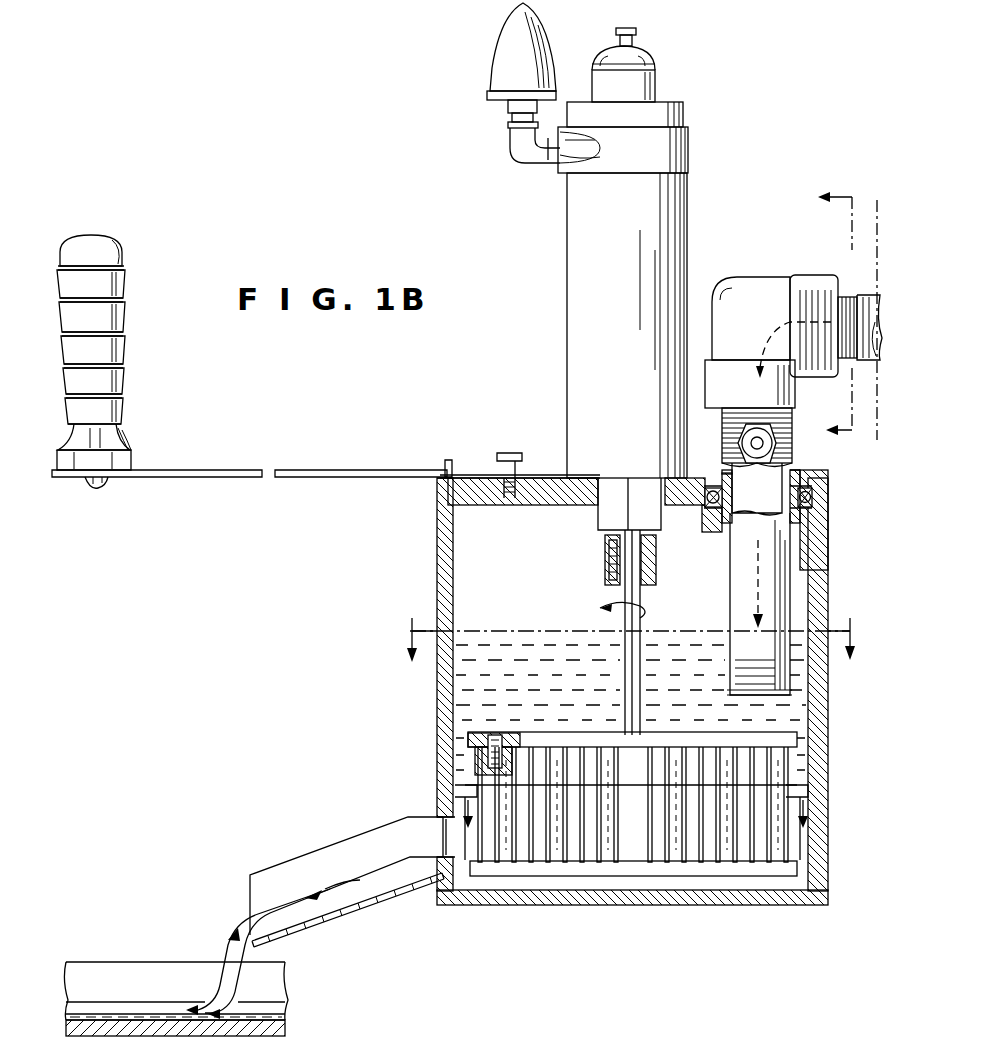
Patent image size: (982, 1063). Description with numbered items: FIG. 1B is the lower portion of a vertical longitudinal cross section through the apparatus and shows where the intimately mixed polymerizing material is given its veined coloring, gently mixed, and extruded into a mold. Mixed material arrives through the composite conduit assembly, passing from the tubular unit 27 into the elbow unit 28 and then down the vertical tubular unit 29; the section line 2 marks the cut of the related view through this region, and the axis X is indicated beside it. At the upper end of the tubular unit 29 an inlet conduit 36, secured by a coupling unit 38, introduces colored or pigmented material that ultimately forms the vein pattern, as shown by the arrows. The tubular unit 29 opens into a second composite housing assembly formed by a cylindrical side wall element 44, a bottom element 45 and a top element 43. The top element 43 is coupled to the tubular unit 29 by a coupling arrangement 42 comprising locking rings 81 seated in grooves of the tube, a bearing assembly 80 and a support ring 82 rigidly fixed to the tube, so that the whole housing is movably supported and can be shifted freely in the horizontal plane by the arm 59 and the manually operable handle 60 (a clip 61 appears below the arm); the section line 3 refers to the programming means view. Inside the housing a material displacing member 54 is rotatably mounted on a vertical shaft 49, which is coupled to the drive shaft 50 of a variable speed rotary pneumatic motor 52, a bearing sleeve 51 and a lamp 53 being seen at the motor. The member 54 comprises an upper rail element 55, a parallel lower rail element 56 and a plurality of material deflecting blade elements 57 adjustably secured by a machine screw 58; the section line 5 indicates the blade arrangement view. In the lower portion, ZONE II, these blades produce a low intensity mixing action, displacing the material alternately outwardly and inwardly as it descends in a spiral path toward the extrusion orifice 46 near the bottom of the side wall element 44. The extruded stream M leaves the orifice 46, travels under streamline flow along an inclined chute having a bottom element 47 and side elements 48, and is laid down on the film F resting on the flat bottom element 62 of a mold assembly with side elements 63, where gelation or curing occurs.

The tubular unit 27 is at (868, 304).
The elbow unit 28 is at (742, 292).
The tubular unit 29 is at (727, 455).
The inlet conduit 36 is at (746, 438).
The coupling unit 38 is at (771, 458).
The coupling arrangement 42 is at (708, 516).
The top element 43 is at (546, 477).
The cylindrical side wall element 44 is at (437, 561).
The bottom element 45 is at (620, 899).
The extrusion orifice 46 is at (440, 859).
The bottom element 47 is at (345, 894).
The side elements 48 is at (334, 844).
The vertical shaft 49 is at (624, 684).
The drive shaft 50 is at (608, 543).
The shaft 51 is at (606, 560).
The variable speed rotary pneumatic motor 52 is at (576, 266).
The indicator lamp 53 is at (551, 162).
The material displacing member 54 is at (672, 748).
The upper rail element 55 is at (765, 742).
The lower rail element 56 is at (732, 878).
The material deflecting blade elements 57 is at (586, 755).
The machine screw 58 is at (492, 734).
The arm 59 is at (326, 471).
The manually operable handle 60 is at (119, 345).
The clip 61 is at (101, 483).
The flat bottom element 62 is at (178, 1025).
The side elements 63 is at (143, 991).
The bearing assembly 80 is at (814, 499).
The locking rings 81 is at (704, 495).
The support ring 82 is at (815, 520).
The passageway 2 is at (825, 317).
The tapered shoulder portion 3 is at (631, 654).
The casing element 5 is at (634, 825).
The axis X- X is at (874, 318).
The extruded stream M is at (242, 922).
The film F is at (264, 1014).
The Zone II ZONE is at (468, 767).